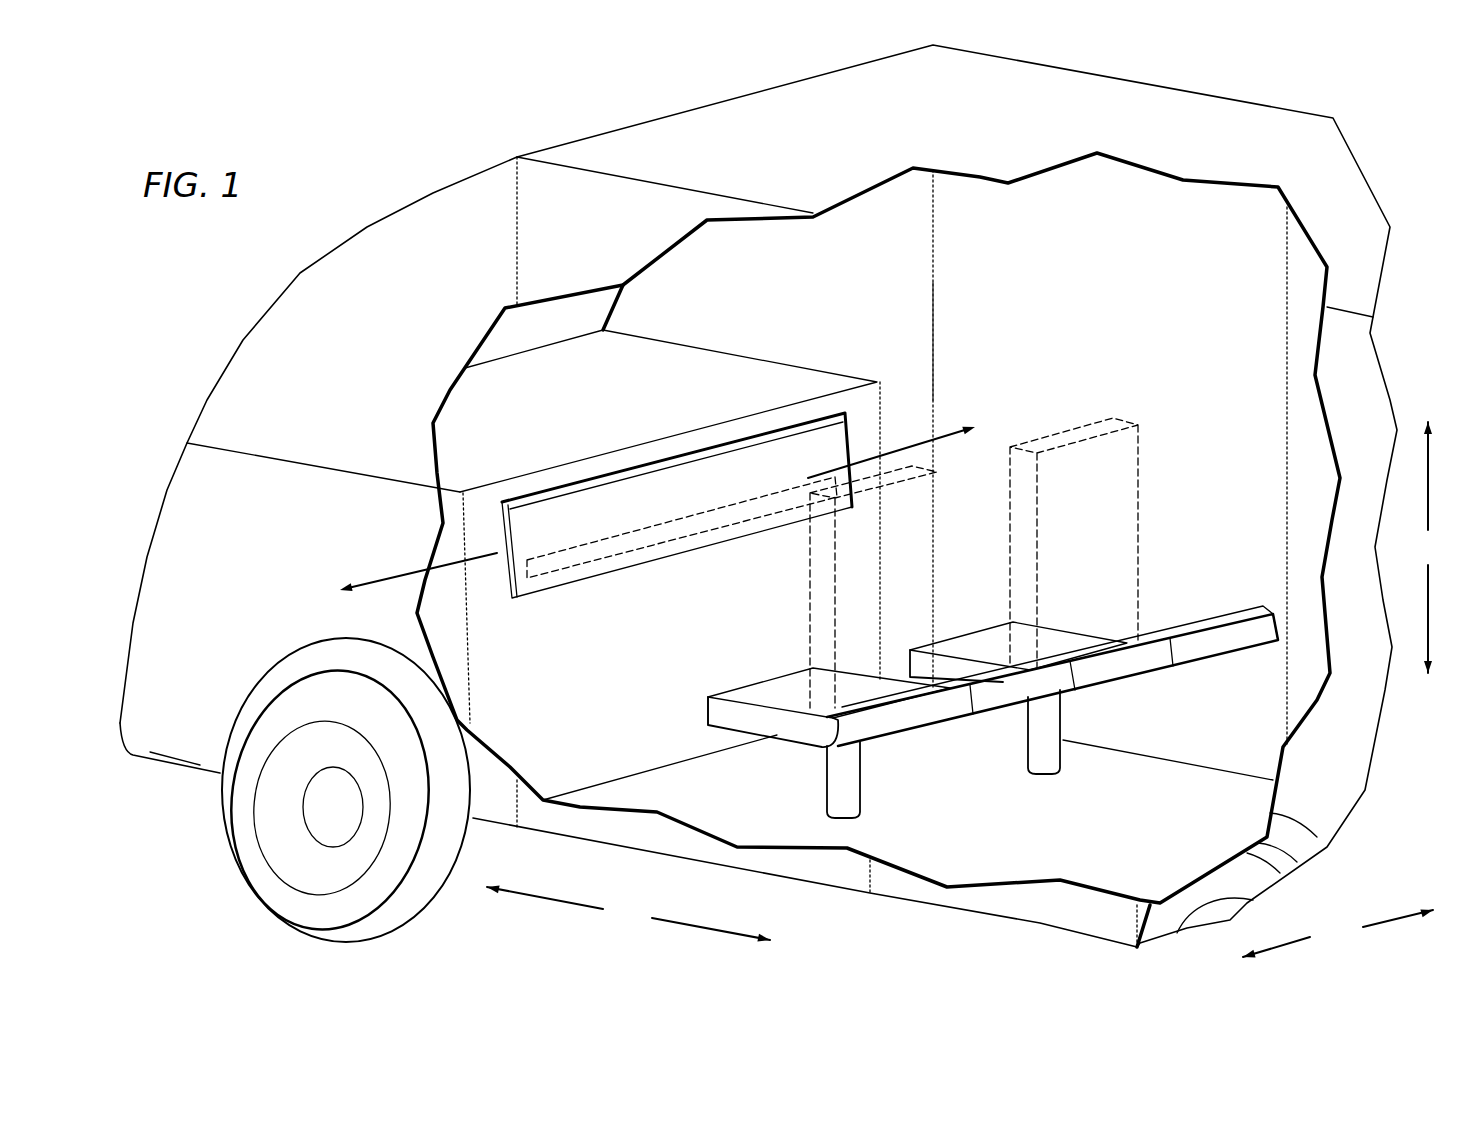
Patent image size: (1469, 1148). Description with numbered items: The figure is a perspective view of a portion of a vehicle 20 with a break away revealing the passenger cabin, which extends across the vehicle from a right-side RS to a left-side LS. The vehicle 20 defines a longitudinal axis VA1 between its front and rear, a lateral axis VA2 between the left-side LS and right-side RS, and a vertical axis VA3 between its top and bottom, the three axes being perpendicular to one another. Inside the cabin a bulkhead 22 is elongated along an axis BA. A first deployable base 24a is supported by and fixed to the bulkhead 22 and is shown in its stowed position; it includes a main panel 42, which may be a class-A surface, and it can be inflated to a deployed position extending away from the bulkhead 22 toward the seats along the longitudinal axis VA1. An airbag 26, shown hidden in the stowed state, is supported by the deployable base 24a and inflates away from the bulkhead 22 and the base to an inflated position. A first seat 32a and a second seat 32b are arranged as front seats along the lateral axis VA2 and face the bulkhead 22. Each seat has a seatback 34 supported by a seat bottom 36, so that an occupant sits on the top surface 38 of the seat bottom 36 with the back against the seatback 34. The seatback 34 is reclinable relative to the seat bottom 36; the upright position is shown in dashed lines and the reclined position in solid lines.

The vehicle 20 is at (448, 127).
The bulkhead 22 is at (693, 368).
The first deployable base 24a is at (827, 450).
The airbag 26 is at (610, 533).
The main panel 42 is at (657, 493).
The first seat 32a is at (917, 767).
The second seat 32b is at (1153, 692).
The seatback 34 is at (930, 530).
The seat bottom 36 is at (723, 722).
The top surface 38 is at (760, 700).
The right-side RS is at (933, 283).
The left-side LS is at (177, 727).
The axis BA is at (397, 578).
The longitudinal axis VA1 is at (628, 914).
The lateral axis VA2 is at (1338, 934).
The vertical axis VA3 is at (1433, 547).